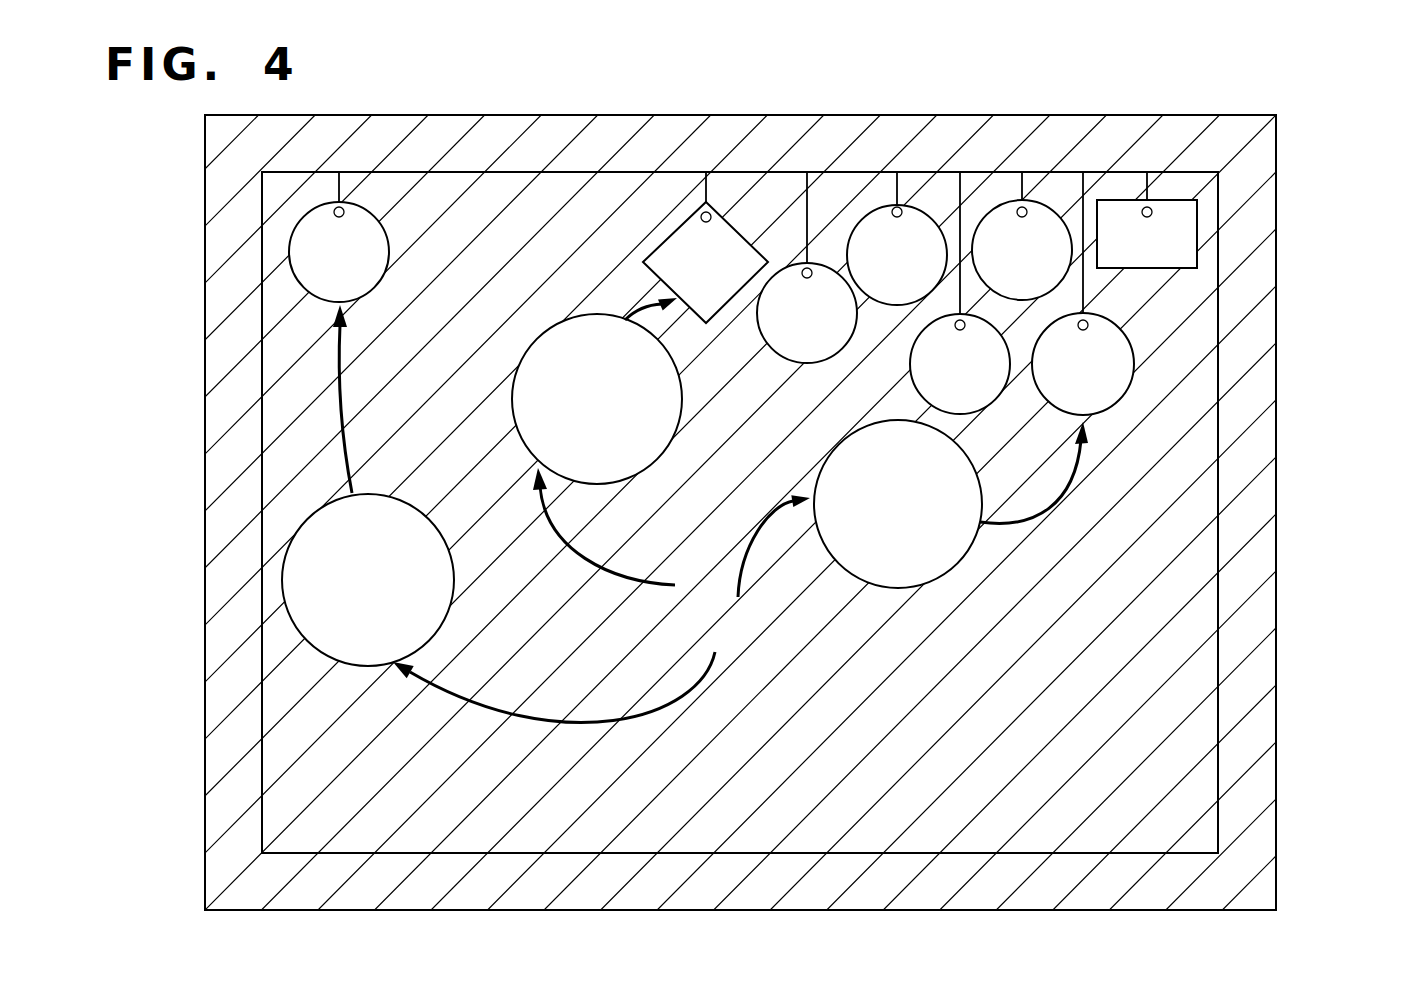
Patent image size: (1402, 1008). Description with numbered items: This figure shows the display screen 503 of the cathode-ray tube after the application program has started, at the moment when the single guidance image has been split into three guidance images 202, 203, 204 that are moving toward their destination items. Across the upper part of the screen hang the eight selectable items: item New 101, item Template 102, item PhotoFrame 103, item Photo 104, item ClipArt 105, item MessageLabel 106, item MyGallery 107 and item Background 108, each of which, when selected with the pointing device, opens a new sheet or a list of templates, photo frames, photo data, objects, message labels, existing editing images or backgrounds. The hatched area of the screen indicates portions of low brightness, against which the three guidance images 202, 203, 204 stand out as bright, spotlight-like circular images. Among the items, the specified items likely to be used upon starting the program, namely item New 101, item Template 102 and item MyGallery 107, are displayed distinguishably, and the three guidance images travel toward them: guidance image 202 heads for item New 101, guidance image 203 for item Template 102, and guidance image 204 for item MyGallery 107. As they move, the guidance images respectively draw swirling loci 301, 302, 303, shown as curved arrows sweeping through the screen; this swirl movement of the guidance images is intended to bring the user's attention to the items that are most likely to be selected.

The item New 101 is at (371, 214).
The item Template 102 is at (680, 227).
The item PhotoFrame 103 is at (790, 265).
The item Photo 104 is at (871, 212).
The item ClipArt 105 is at (990, 407).
The item MessageLabel 106 is at (1000, 205).
The item MyGallery 107 is at (1117, 407).
The item Background 108 is at (1122, 200).
The guidance image 202 is at (327, 502).
The guidance image 203 is at (530, 333).
The guidance image 204 is at (833, 443).
The swirling locus 301 is at (522, 728).
The swirling locus 302 is at (572, 553).
The swirling locus 303 is at (763, 533).
The display screen 503 is at (1278, 537).